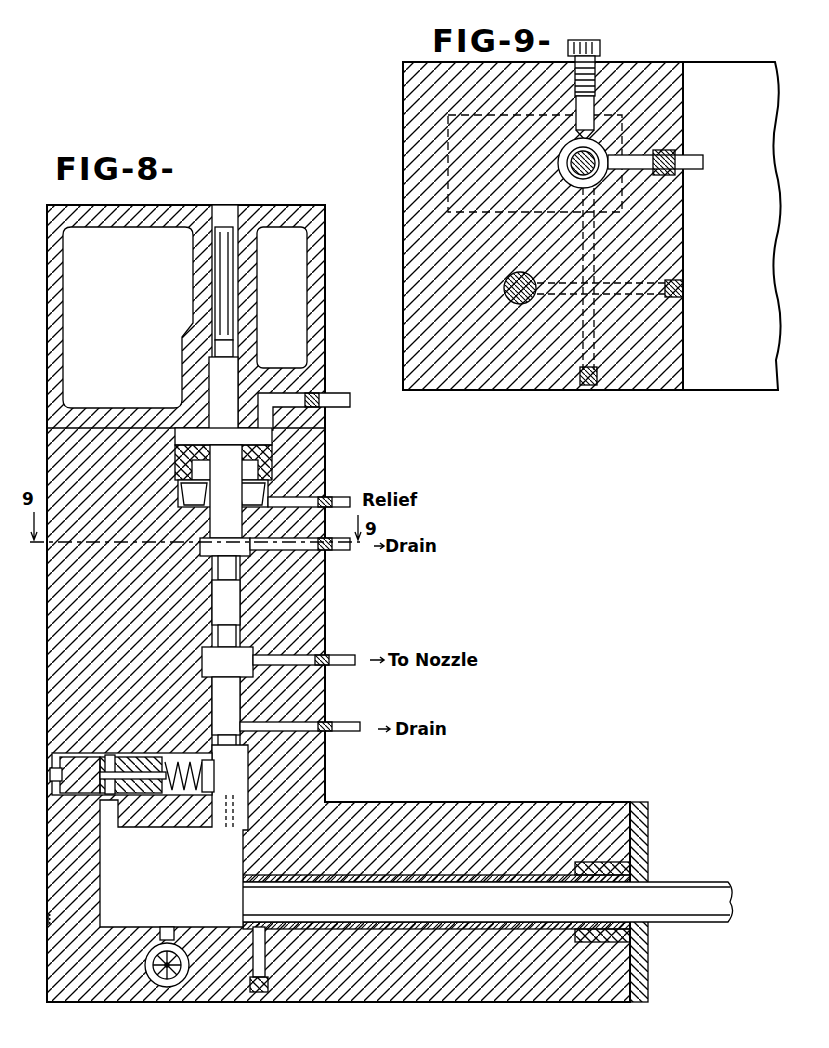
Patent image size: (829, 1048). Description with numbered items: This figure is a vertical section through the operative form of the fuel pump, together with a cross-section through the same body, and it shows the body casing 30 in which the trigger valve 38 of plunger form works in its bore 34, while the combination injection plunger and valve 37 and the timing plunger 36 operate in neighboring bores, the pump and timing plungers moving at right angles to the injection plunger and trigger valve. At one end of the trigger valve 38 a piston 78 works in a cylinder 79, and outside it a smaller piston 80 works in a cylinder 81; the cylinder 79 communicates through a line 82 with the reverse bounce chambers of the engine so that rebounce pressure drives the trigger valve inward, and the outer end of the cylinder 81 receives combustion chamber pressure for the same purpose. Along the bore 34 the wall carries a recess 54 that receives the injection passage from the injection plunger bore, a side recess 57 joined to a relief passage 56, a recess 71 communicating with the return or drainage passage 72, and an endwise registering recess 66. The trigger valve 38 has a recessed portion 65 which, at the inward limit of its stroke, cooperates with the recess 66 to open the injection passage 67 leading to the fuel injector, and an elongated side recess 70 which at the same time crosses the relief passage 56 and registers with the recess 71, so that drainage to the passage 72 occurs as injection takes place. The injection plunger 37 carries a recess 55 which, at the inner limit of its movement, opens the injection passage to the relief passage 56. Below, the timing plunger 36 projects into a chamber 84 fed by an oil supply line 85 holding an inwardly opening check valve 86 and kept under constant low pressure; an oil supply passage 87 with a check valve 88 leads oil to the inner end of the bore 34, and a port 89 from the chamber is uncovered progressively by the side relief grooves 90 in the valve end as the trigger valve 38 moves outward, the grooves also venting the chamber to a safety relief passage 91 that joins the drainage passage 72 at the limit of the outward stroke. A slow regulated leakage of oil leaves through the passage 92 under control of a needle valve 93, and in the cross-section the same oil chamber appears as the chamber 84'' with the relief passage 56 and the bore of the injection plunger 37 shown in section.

In FIG. 8, the body casing 30 is at (326, 290).
In FIG. 9, the body casing 30 is at (683, 232).
In FIG. 8, the cylinder 81 is at (235, 345).
In FIG. 8, the smaller piston 80 is at (227, 385).
In FIG. 8, the line 82 is at (305, 407).
In FIG. 8, the cylinder 79 is at (175, 438).
In FIG. 8, the piston 78 is at (272, 455).
In FIG. 8, the timing plunger 36 is at (455, 711).
In FIG. 8, the recess 71 is at (205, 542).
In FIG. 9, the recess 71 is at (568, 148).
In FIG. 8, the elongated side recess 70 is at (240, 565).
In FIG. 8, the drainage passage 72 is at (322, 550).
In FIG. 9, the drainage passage 72 is at (700, 169).
In FIG. 8, the side recess 57 is at (240, 600).
In FIG. 8, the bore 34 is at (212, 600).
In FIG. 8, the recessed portion 65 is at (240, 630).
In FIG. 8, the injection passage 67 is at (372, 636).
In FIG. 8, the recess 66 is at (202, 660).
In FIG. 8, the recess 54 is at (240, 690).
In FIG. 8, the safety relief passage 91 is at (330, 735).
In FIG. 8, the port 89 is at (252, 752).
In FIG. 8, the chamber 84 is at (174, 836).
In FIG. 8, the passage 92 is at (230, 838).
In FIG. 8, the check valve 88 is at (160, 760).
In FIG. 8, the oil supply passage 87 is at (170, 796).
In FIG. 8, the side relief grooves 90 is at (212, 745).
In FIG. 8, the oil supply line 85 is at (200, 922).
In FIG. 8, the check valve 86 is at (152, 982).
In FIG. 9, the chamber 84'' is at (449, 235).
In FIG. 9, the needle valve 93 is at (596, 108).
In FIG. 9, the trigger valve 38 is at (560, 172).
In FIG. 9, the relief passage 56 is at (596, 240).
In FIG. 9, the recess 55 is at (504, 292).
In FIG. 9, the injection plunger 37 is at (518, 305).